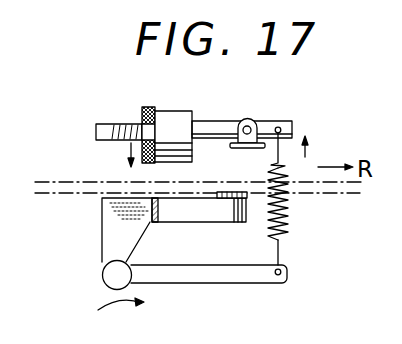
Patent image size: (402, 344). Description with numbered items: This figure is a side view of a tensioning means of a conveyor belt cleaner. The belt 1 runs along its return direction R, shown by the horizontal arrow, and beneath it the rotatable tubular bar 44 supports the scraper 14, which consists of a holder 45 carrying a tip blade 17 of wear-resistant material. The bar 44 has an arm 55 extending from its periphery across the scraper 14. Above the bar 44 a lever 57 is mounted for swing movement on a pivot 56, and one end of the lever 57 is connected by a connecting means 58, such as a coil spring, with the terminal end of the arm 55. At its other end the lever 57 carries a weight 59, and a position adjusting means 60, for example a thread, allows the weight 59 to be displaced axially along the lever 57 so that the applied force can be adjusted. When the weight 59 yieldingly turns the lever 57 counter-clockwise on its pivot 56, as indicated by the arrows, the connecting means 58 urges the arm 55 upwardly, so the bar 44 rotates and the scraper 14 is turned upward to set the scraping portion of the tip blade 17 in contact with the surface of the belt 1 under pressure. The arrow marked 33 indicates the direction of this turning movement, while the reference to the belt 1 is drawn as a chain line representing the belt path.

The belt 1 is at (333, 193).
The scraper 14 is at (188, 226).
The tip blade 17 is at (223, 192).
The drive direction indication 33 is at (253, 99).
The tubular bar 44 is at (102, 277).
The holder 45 is at (226, 222).
The arm 55 is at (212, 283).
The pivot 56 is at (250, 126).
The lever 57 is at (218, 121).
The connecting means 58 is at (286, 220).
The weight 59 is at (177, 115).
The position adjusting means 60 is at (116, 124).